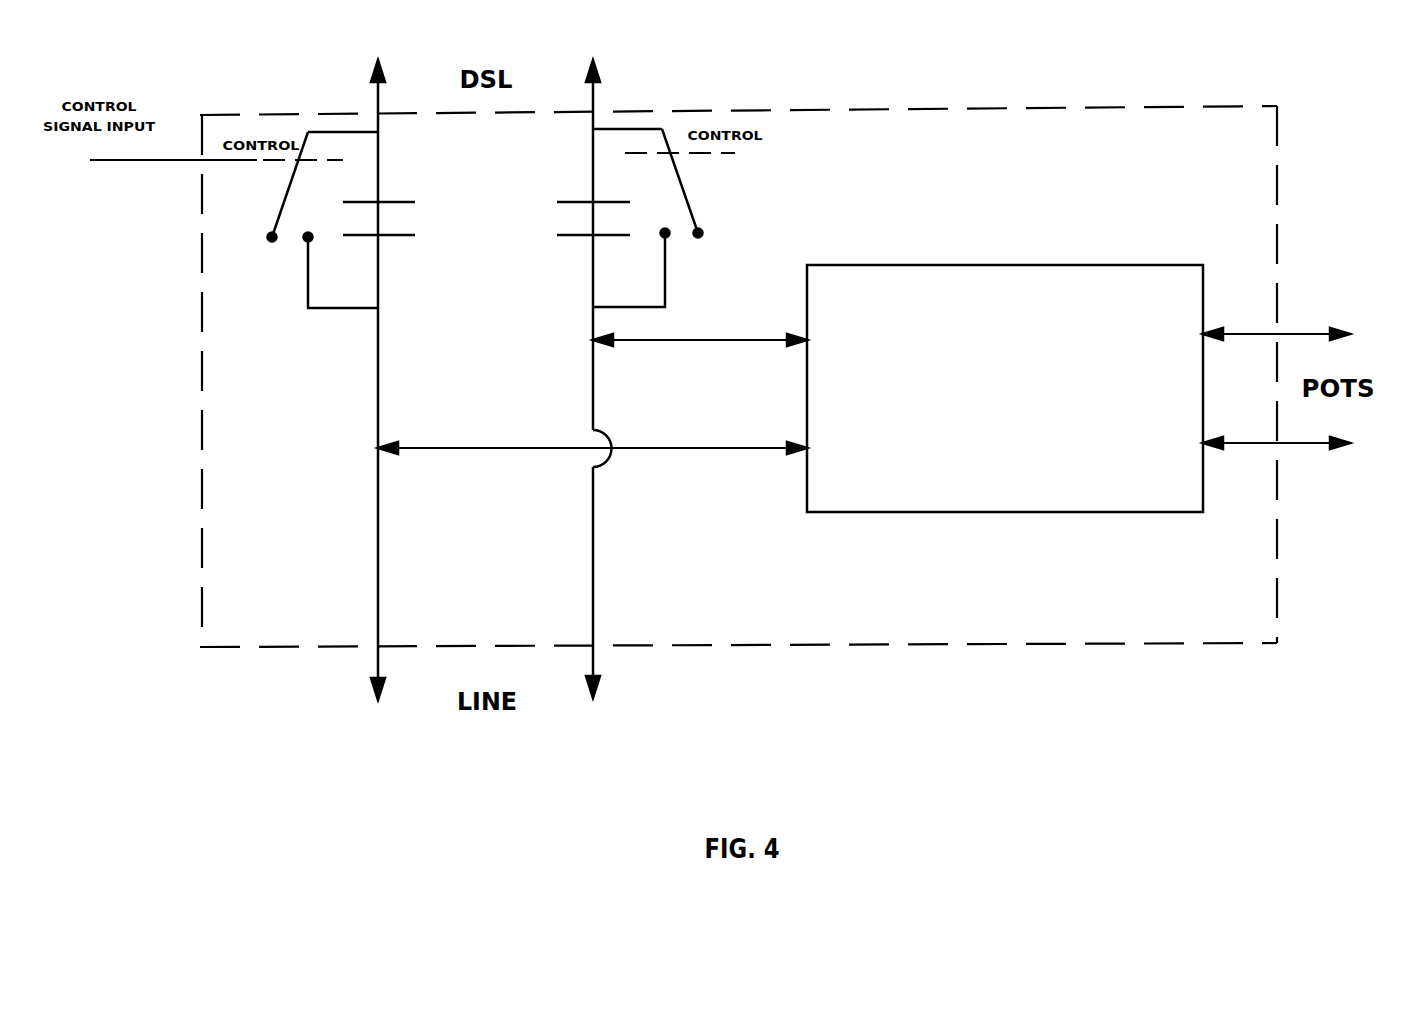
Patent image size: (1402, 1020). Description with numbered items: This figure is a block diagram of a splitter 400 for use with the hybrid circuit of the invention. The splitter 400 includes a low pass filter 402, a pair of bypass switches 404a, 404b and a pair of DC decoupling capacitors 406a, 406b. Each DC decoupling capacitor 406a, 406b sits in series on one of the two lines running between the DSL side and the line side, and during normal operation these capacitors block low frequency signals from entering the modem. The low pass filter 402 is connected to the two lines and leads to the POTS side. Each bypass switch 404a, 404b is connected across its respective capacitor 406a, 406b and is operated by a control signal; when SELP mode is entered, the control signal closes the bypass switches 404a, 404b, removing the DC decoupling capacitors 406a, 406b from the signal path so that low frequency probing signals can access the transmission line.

The splitter 400 is at (1070, 156).
The low pass filter 402 is at (1027, 436).
The bypass switch 404a is at (264, 276).
The bypass switch 404b is at (728, 213).
The DC decoupling capacitor 406a is at (420, 277).
The DC decoupling capacitor 406b is at (566, 275).